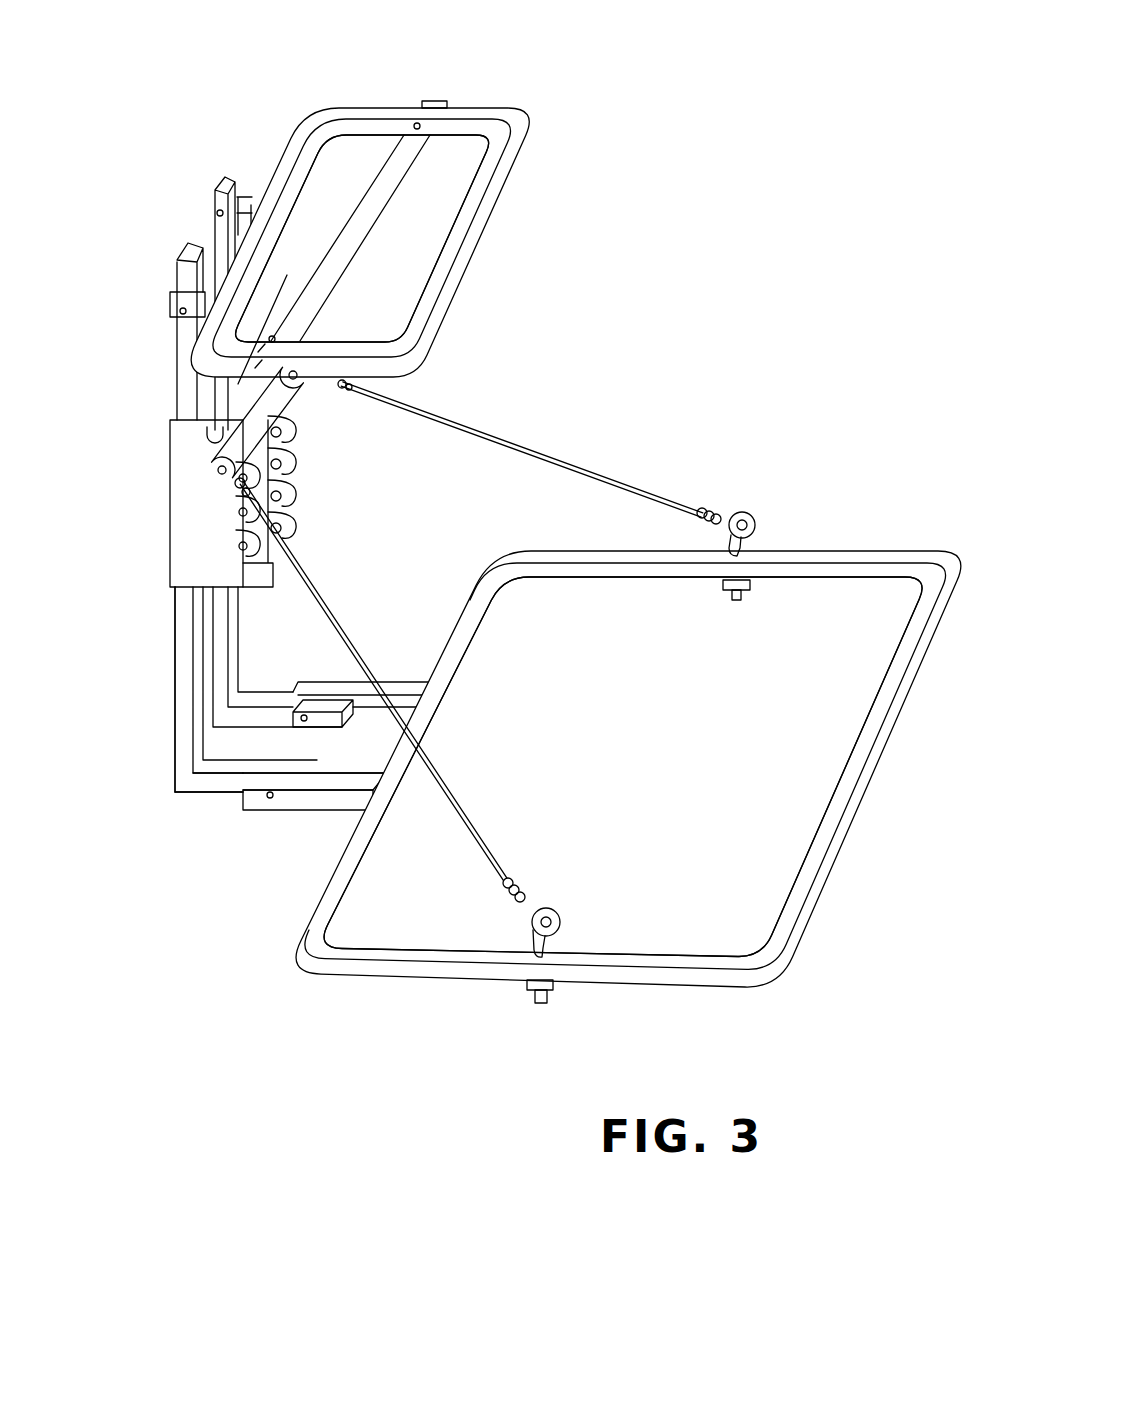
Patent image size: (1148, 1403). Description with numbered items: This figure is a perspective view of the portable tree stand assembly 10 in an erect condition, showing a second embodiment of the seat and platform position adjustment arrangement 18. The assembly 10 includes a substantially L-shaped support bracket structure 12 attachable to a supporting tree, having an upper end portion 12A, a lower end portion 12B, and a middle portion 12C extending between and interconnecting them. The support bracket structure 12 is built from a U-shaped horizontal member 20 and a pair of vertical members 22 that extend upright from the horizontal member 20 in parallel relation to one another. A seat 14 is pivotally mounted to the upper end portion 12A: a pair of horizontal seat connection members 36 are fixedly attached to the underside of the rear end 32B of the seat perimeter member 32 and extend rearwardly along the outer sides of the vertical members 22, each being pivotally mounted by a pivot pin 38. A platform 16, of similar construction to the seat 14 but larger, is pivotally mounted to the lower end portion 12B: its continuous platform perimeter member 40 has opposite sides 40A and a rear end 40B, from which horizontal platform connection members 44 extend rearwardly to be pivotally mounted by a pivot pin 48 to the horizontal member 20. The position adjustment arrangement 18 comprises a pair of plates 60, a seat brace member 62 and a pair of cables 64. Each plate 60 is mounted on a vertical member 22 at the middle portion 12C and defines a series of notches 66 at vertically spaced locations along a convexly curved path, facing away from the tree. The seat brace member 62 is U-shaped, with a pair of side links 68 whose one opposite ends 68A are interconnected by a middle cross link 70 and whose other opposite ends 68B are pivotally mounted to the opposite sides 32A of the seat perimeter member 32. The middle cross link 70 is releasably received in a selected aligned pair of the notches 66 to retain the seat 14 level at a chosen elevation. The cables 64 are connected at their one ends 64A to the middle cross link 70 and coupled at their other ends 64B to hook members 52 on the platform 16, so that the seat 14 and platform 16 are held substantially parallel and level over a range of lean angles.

The portable tree stand assembly 10 is at (745, 199).
The support bracket structure 12 is at (170, 717).
The upper end portion of support bracket structure 12A is at (221, 188).
The lower end portion of support bracket structure 12B is at (332, 722).
The middle portion of support bracket structure 12C is at (176, 398).
The seat 14 is at (403, 239).
The platform 16 is at (628, 751).
The seat and platform position adjustment arrangement 18 is at (386, 488).
The U-shaped horizontal member 20 is at (257, 718).
The vertical members 22 is at (175, 630).
The seat perimeter member 32 is at (497, 233).
The opposite sides of seat perimeter member 32A is at (462, 116).
The rear end of seat perimeter member 32B is at (272, 190).
The horizontal seat connection members 36 is at (251, 205).
The pivot pin 38 is at (216, 211).
The platform perimeter member 40 is at (836, 880).
The opposite sides of platform perimeter member 40A is at (800, 551).
The rear end of platform perimeter member 40B is at (485, 642).
The horizontal platform connection members 44 is at (405, 682).
The pivot pin 48 is at (304, 714).
The hook members 52 is at (749, 510).
The plates 60 is at (227, 505).
The seat brace member 62 is at (296, 269).
The cables 64 is at (439, 668).
The one ends of cables 64A is at (352, 387).
The other ends of cables 64B is at (708, 507).
The notches 66 is at (295, 460).
The side links 68 is at (405, 172).
The one opposite ends of side links 68A is at (298, 335).
The other opposite ends of side links 68B is at (433, 101).
The middle cross link 70 is at (272, 317).